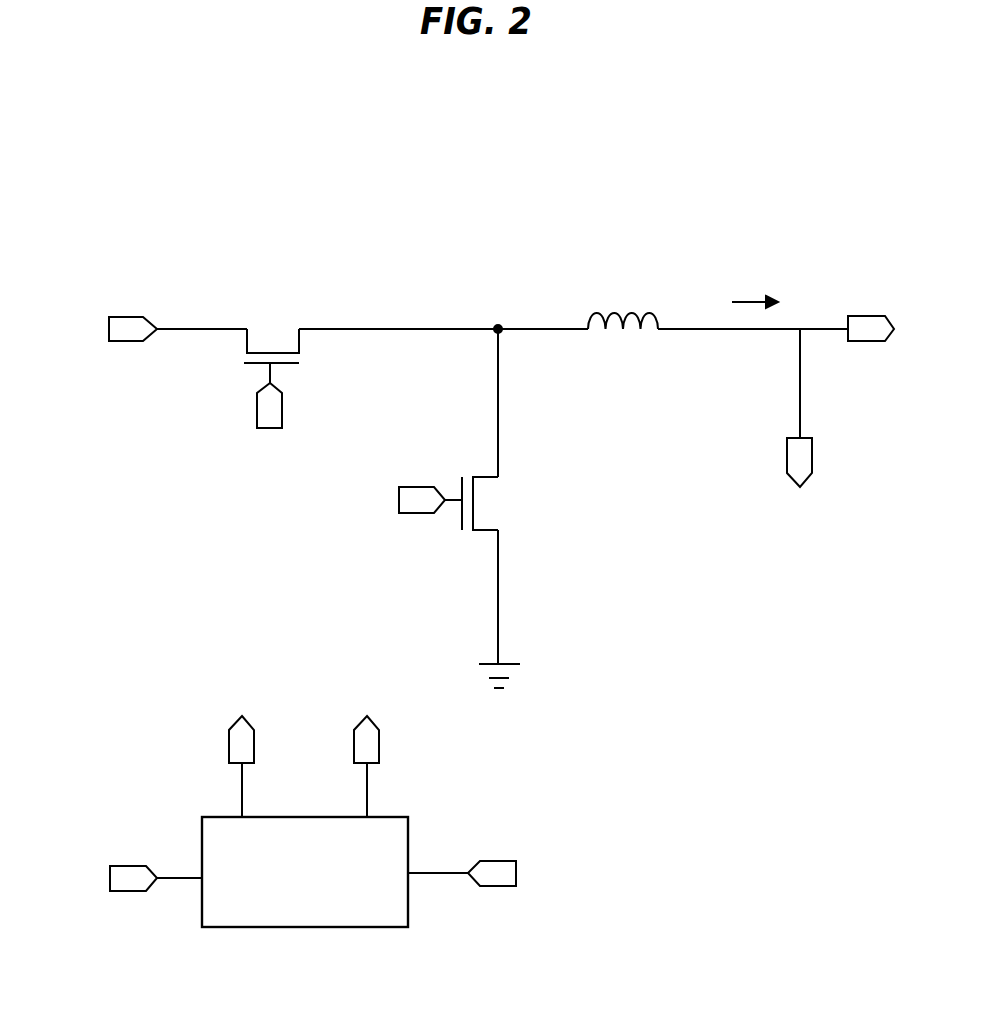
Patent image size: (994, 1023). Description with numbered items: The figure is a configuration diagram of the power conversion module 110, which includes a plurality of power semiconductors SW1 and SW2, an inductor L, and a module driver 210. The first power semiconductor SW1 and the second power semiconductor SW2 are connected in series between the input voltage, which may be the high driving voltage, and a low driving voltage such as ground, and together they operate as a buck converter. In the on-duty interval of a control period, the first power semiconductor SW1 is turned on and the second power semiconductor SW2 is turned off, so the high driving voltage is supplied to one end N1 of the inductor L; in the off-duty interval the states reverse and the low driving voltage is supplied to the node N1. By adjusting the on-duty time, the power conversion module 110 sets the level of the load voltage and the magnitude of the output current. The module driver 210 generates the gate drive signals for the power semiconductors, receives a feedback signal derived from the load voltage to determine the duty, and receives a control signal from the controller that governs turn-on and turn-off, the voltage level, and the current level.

The power conversion module 110 is at (496, 156).
The module driver 210 is at (317, 927).
The first power semiconductor SW1 is at (271, 372).
The second power semiconductor SW2 is at (456, 503).
The inductor L is at (623, 295).
The one end of the inductor N1 is at (490, 304).